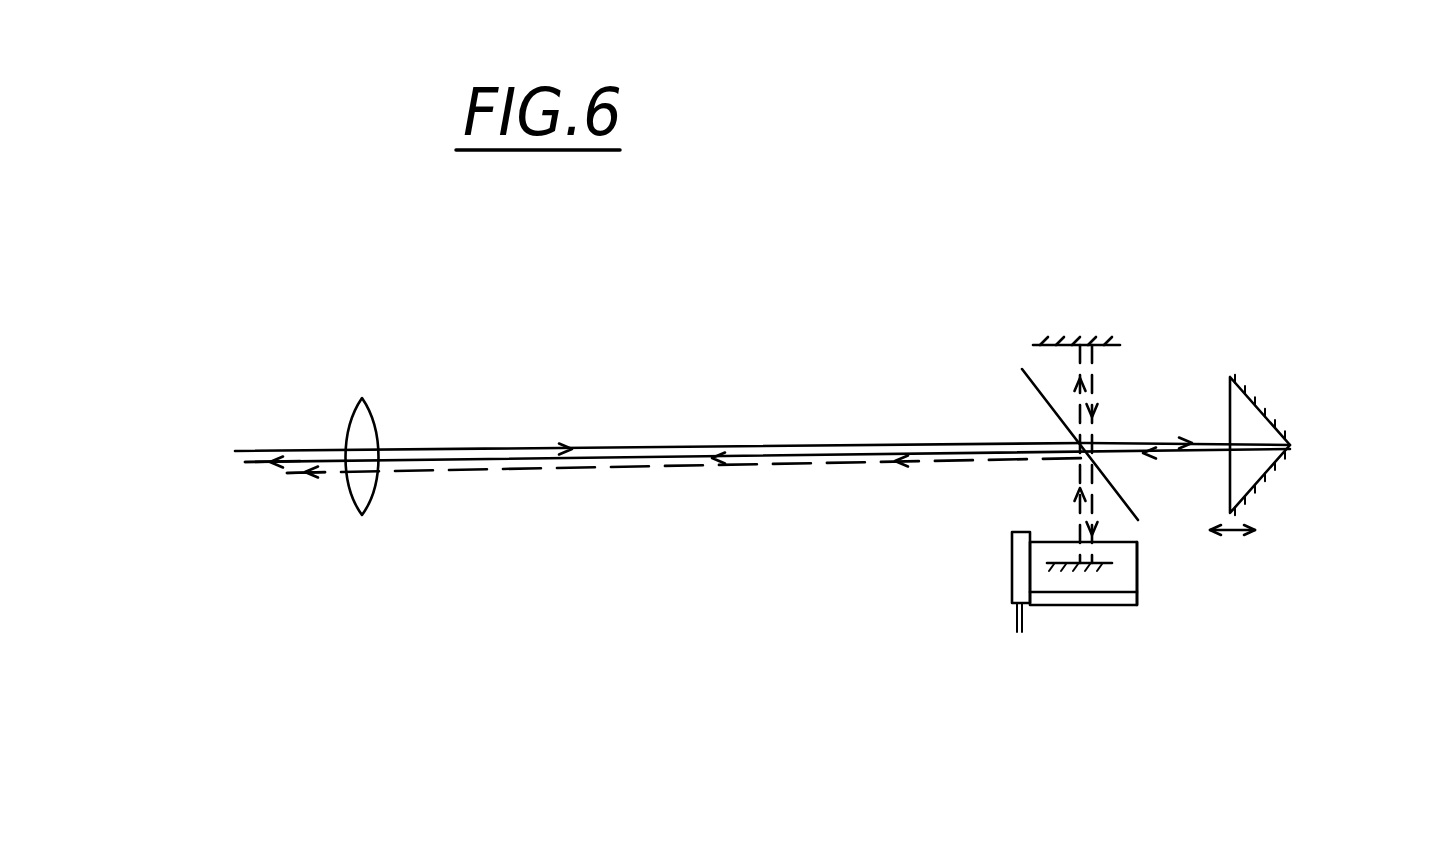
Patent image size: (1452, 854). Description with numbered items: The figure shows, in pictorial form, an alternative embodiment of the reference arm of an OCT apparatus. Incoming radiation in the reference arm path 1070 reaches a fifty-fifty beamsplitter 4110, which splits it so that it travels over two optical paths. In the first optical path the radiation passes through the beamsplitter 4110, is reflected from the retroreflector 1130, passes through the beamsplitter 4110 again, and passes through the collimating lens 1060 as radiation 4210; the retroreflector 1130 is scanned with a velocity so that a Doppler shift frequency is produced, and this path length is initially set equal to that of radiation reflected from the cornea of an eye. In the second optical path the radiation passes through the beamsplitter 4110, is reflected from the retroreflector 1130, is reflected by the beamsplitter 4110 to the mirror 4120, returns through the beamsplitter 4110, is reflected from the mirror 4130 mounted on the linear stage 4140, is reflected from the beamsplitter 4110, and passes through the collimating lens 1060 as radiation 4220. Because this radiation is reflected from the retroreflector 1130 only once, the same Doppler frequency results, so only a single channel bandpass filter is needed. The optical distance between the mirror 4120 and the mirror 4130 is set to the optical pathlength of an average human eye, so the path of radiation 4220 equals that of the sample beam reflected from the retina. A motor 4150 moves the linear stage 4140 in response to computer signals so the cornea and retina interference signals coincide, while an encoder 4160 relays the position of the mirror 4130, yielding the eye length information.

The collimating lens 1060 is at (380, 423).
The reference arm path 1070 is at (662, 447).
The retroreflector 1130 is at (1277, 422).
The 50/50 beamsplitter 4110 is at (1033, 388).
The mirror 4120 is at (1110, 343).
The mirror 4130 is at (1117, 560).
The linear stage 4140 is at (1138, 582).
The motor 4150 is at (1008, 585).
The encoder 4160 is at (1060, 600).
The radiation 4210 is at (260, 467).
The radiation 4220 is at (303, 478).